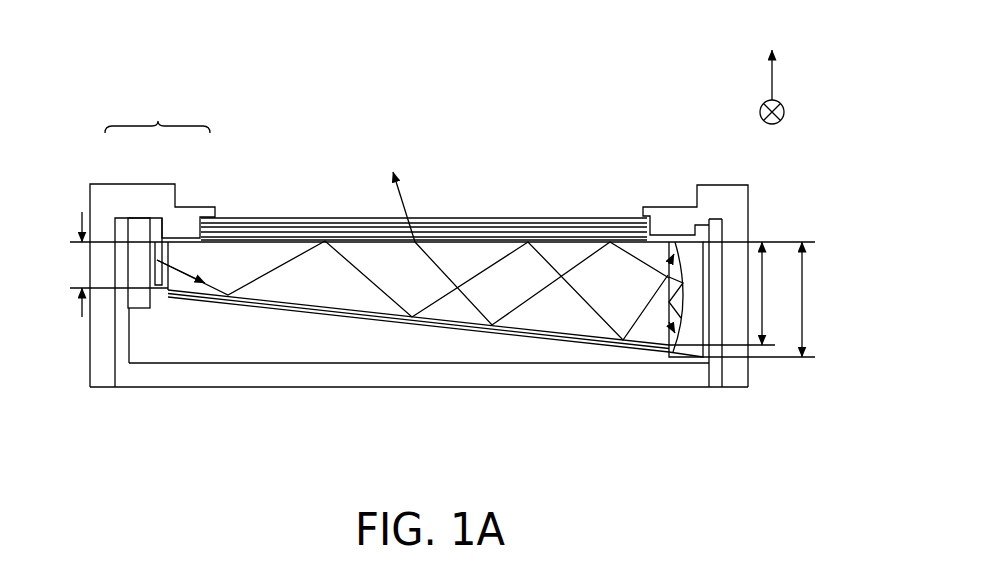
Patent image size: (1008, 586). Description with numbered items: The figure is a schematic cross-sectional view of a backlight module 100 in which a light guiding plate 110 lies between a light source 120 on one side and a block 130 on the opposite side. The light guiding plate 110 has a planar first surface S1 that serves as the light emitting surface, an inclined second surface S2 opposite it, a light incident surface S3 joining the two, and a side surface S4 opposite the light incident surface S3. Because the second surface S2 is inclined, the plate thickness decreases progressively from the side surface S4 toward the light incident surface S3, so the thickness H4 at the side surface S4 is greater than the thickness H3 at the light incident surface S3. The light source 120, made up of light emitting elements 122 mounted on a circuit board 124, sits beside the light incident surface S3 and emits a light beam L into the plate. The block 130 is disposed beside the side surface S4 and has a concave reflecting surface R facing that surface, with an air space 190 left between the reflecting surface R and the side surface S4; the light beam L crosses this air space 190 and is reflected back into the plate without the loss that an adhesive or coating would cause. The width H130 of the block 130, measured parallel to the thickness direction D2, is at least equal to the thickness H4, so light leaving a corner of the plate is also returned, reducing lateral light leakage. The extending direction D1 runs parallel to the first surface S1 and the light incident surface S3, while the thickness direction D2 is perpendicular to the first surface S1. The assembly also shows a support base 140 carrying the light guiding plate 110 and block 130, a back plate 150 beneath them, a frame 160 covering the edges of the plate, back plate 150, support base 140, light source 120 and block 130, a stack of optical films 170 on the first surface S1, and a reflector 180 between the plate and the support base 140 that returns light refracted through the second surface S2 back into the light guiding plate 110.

The backlight module 100 is at (761, 415).
The light guiding plate 110 is at (567, 326).
The light source 120 is at (157, 112).
The light emitting elements 122 is at (157, 250).
The circuit board 124 is at (140, 223).
The block 130 is at (691, 340).
The support base 140 is at (505, 353).
The back plate 150 is at (148, 382).
The frame 160 is at (103, 382).
The optical films 170 is at (303, 218).
The reflector 180 is at (323, 317).
The air space 190 is at (676, 311).
The reflecting surface R is at (676, 342).
The light beam L is at (413, 290).
The first surface S1 is at (186, 240).
The second surface S2 is at (200, 293).
The light incident surface S3 is at (167, 253).
The side surface S4 is at (671, 245).
The thickness at the light incident surface H3 is at (110, 264).
The thickness at the side surface H4 is at (742, 293).
The width of the block H130 is at (776, 299).
The extending direction D1 is at (788, 112).
The thickness direction D2 is at (773, 59).